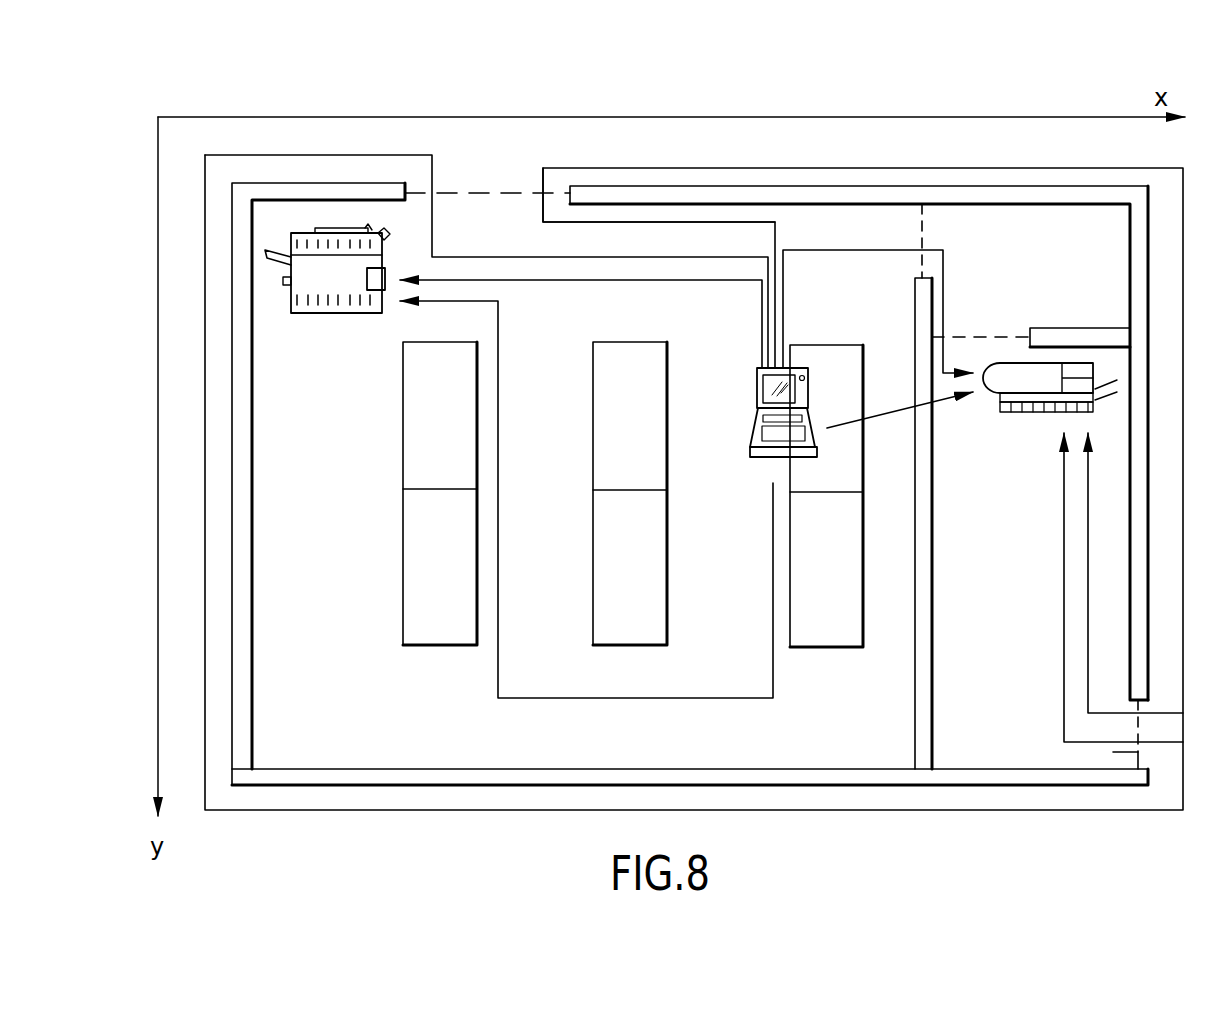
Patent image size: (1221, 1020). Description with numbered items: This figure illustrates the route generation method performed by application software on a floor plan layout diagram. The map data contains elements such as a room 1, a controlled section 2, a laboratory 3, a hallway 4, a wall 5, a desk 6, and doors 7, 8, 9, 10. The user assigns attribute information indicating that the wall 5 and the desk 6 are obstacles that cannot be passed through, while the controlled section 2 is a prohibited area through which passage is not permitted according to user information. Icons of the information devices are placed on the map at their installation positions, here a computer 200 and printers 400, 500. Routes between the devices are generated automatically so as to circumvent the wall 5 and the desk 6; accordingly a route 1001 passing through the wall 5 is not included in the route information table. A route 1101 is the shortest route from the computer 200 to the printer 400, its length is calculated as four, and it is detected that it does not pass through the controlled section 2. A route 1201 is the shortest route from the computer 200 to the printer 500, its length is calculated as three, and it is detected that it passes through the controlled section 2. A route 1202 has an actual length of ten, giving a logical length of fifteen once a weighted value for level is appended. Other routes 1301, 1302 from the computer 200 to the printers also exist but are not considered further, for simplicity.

The room 1 is at (308, 735).
The controlled section 2 is at (983, 273).
The laboratory 3 is at (1013, 594).
The hallway 4 is at (686, 152).
The wall 5 is at (932, 707).
The desk 6 is at (403, 580).
The door 7 is at (470, 192).
The door 8 is at (916, 222).
The door 9 is at (988, 337).
The door 10 is at (1113, 752).
The computer 200 is at (757, 458).
The printer 400 is at (342, 313).
The printer 500 is at (1022, 413).
The route 1001 is at (892, 410).
The route 1101 is at (708, 282).
The route 1201 is at (836, 249).
The route 1202 is at (857, 186).
The route 1301 is at (563, 700).
The route 1302 is at (311, 154).